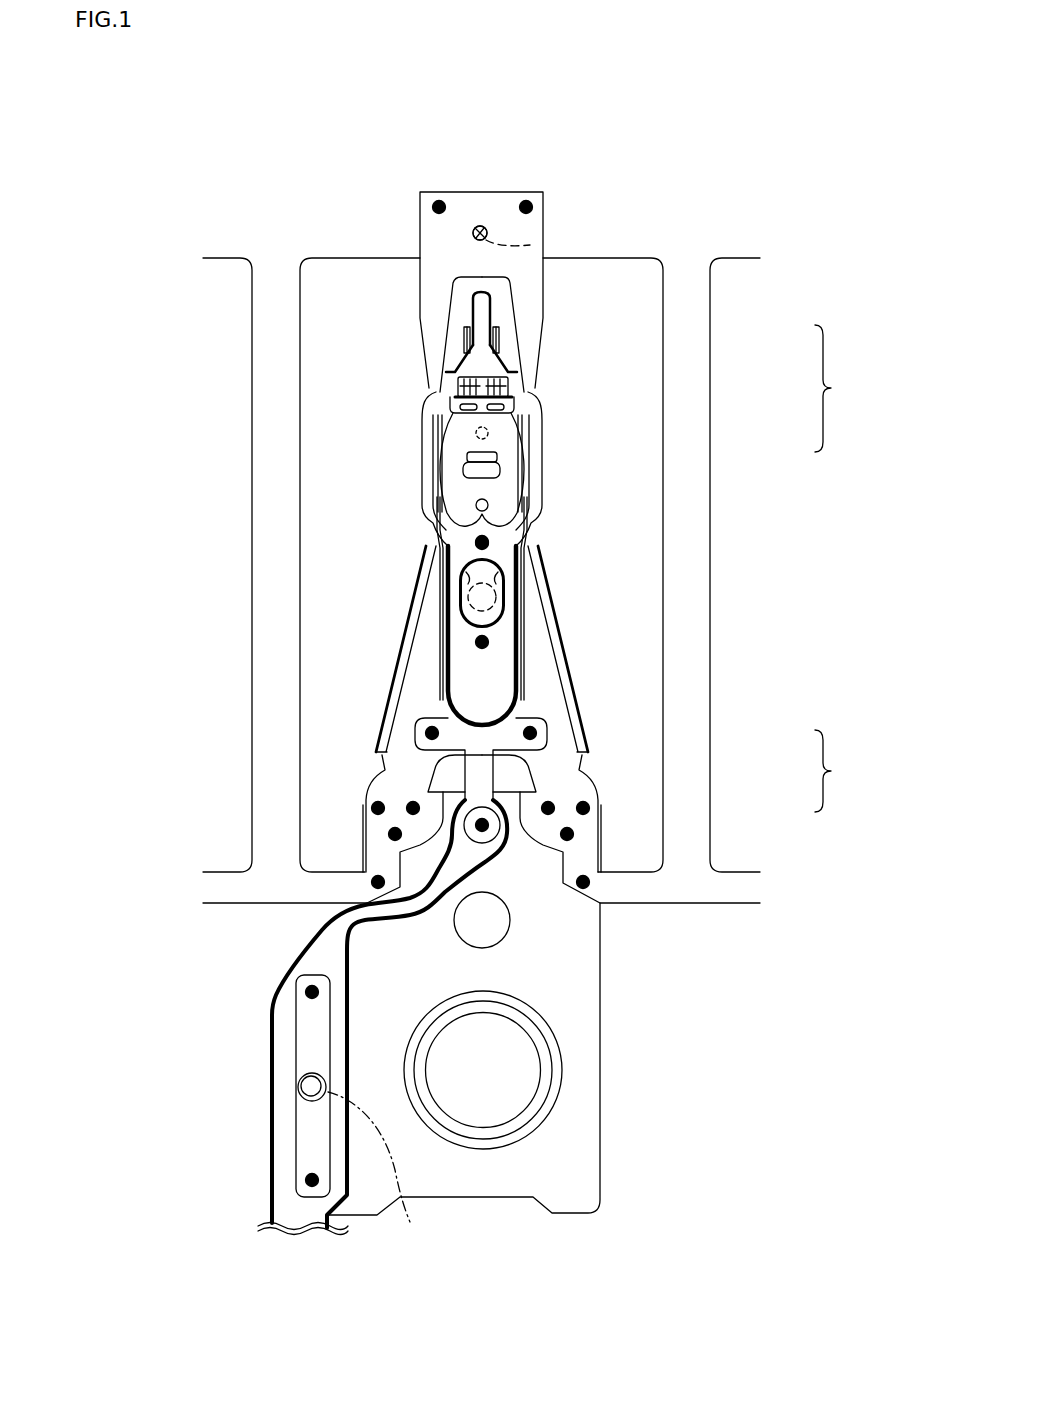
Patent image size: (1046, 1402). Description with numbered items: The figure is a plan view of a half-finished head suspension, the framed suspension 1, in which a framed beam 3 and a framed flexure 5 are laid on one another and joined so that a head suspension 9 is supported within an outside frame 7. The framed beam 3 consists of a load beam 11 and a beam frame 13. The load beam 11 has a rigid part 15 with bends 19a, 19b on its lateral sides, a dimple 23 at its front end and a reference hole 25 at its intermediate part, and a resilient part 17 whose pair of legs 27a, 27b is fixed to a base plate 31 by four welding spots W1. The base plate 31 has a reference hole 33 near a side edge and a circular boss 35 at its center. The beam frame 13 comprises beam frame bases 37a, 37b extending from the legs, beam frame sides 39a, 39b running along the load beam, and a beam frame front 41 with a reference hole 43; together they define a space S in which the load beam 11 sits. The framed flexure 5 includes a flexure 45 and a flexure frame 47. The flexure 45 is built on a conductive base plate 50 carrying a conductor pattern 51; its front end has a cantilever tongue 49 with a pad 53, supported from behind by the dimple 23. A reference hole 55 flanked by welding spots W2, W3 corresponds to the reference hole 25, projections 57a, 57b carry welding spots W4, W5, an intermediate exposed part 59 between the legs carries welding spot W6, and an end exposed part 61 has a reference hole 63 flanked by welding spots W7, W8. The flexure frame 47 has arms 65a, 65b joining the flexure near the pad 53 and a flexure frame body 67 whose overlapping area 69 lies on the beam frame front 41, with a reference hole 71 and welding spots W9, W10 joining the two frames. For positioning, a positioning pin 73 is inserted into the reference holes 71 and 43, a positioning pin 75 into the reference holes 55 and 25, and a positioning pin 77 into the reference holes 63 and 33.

The framed suspension 1 is at (730, 131).
The framed beam 3 is at (836, 771).
The framed flexure 5 is at (836, 388).
The outside frame 7 is at (400, 213).
The head suspension 9 is at (375, 647).
The load beam 11 is at (590, 740).
The beam frame 13 is at (690, 812).
The rigid part 15 is at (535, 619).
The resilient part 17 is at (368, 778).
The bend 19a is at (438, 580).
The bend 19b is at (522, 550).
The dimple 23 is at (476, 432).
The reference hole 25 is at (500, 583).
The leg 27a is at (395, 772).
The leg 27b is at (563, 773).
The base plate 31 is at (604, 1137).
The reference hole 33 is at (302, 1088).
The boss 35 is at (484, 1150).
The beam frame base 37a is at (328, 886).
The beam frame base 37b is at (648, 895).
The beam frame side 39a is at (268, 430).
The beam frame side 39b is at (695, 513).
The beam frame front 41 is at (275, 202).
The reference hole 43 is at (486, 228).
The flexure 45 is at (542, 435).
The flexure frame 47 is at (542, 335).
The tongue 49 is at (512, 409).
The conductive base plate 50 is at (475, 635).
The conductor pattern 51 is at (527, 489).
The pad 53 is at (450, 376).
The reference hole 55 is at (470, 558).
The projection 57a is at (420, 716).
The projection 57b is at (545, 712).
The intermediate exposed part 59 is at (490, 840).
The end exposed part 61 is at (295, 1040).
The reference hole 63 is at (305, 1097).
The flexure frame arm 65a is at (428, 326).
The flexure frame arm 65b is at (530, 299).
The flexure frame body 67 is at (475, 203).
The overlapping area 69 is at (535, 222).
The reference hole 71 is at (472, 233).
The positioning pin 73 is at (530, 245).
The positioning pin 75 is at (470, 598).
The positioning pin 77 is at (382, 1172).
The space S is at (325, 319).
The welding spots W1 is at (371, 882).
The welding spot W2 is at (478, 537).
The welding spot W3 is at (489, 643).
The welding spot W4 is at (432, 728).
The welding spot W5 is at (534, 730).
The welding spot W6 is at (484, 830).
The welding spot W7 is at (318, 991).
The welding spot W8 is at (310, 1180).
The welding spot W9 is at (438, 200).
The welding spot W10 is at (532, 193).